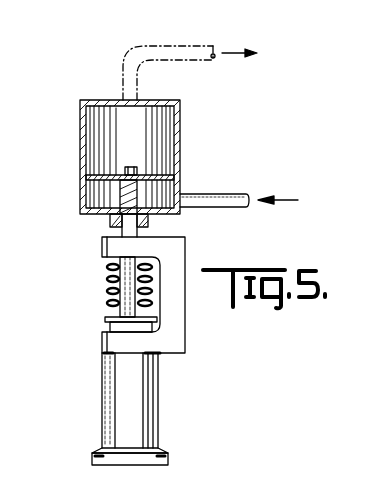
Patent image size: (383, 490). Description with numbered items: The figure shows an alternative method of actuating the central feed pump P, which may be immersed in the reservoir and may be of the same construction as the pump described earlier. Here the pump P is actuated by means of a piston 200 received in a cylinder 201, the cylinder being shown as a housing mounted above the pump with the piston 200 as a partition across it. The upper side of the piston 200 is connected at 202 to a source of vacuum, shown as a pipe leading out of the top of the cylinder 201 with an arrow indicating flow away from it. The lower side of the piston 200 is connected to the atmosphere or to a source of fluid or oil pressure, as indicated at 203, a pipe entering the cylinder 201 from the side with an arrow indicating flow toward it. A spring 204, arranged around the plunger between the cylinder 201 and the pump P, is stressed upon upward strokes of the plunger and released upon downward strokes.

The piston 200 is at (82, 190).
The cylinder 201 is at (80, 138).
The vacuum connection 202 is at (182, 52).
The atmosphere or fluid pressure connection 203 is at (218, 200).
The spring 204 is at (112, 290).
The pump P is at (122, 392).